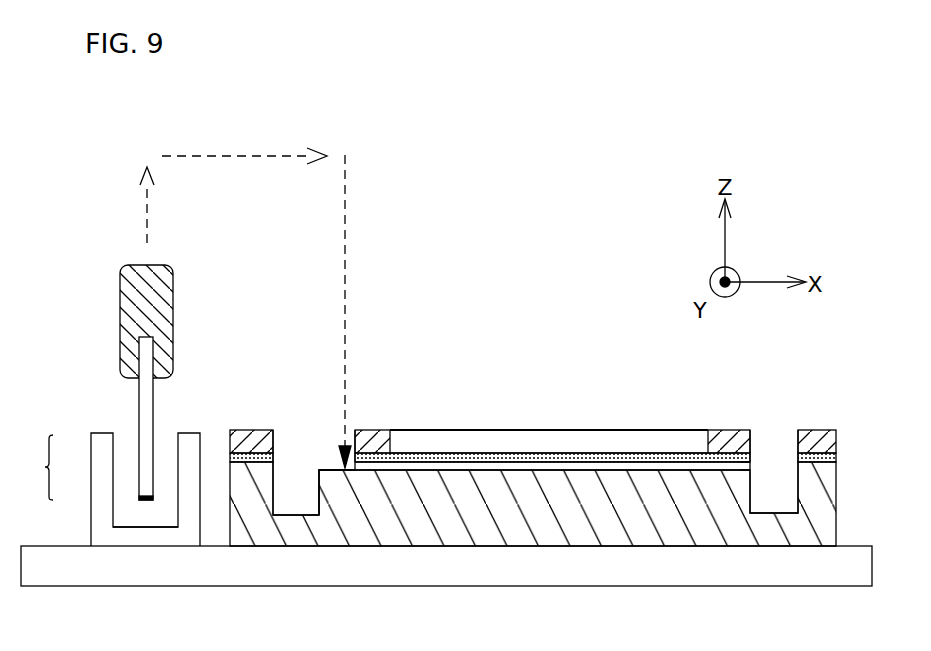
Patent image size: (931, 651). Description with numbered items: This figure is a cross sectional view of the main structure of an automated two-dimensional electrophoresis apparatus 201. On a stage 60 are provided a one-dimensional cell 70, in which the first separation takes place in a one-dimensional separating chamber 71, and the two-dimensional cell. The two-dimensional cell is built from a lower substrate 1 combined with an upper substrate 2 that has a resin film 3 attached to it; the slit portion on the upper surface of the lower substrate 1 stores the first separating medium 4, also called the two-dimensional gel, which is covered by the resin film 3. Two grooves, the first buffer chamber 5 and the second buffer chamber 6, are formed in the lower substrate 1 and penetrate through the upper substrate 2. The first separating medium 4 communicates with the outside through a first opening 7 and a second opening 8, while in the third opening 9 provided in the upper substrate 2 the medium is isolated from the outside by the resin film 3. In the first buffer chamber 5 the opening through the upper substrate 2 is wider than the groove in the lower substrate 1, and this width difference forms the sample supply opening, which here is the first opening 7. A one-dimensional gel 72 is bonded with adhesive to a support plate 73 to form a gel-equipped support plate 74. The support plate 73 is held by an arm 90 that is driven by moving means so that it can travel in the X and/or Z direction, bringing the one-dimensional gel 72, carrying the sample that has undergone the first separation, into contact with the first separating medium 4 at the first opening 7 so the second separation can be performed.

The lower substrate 1 is at (836, 508).
The upper substrate 2 is at (837, 433).
The resin film 3 is at (837, 457).
The first separating medium 4 is at (470, 466).
The first buffer chamber 5 is at (285, 487).
The second buffer chamber 6 is at (773, 485).
The first opening 7 is at (333, 461).
The second opening 8 is at (754, 460).
The third opening 9 is at (443, 440).
The stage 60 is at (627, 572).
The 1D cell 70 is at (105, 540).
The 1D separating chamber 71 is at (152, 515).
The 1D gel 72 is at (143, 500).
The support plate 73 is at (143, 460).
The gel-equipped support plate 74 is at (82, 421).
The arm 90 is at (122, 297).
The two-dimensional electrophoresis apparatus 201 is at (552, 373).